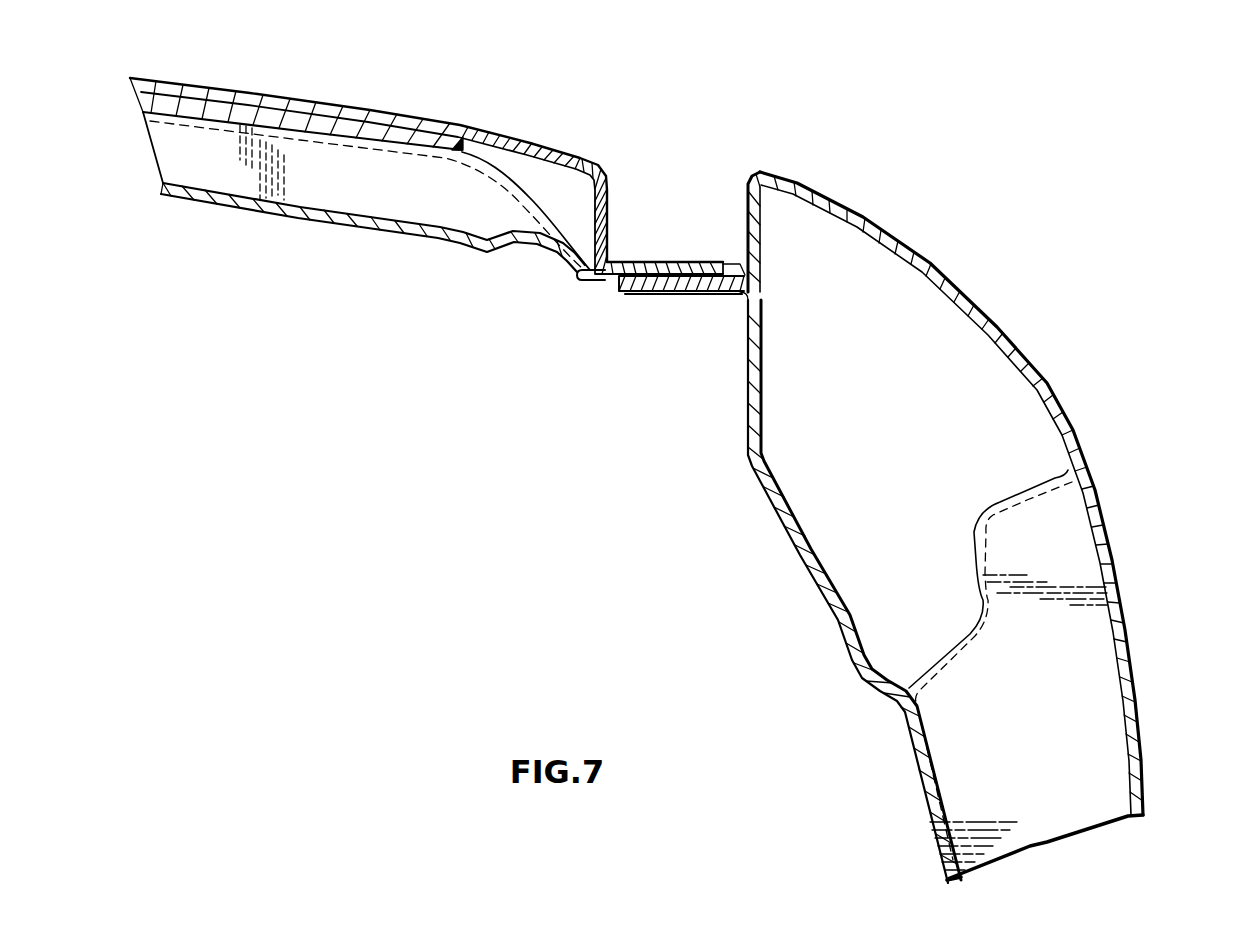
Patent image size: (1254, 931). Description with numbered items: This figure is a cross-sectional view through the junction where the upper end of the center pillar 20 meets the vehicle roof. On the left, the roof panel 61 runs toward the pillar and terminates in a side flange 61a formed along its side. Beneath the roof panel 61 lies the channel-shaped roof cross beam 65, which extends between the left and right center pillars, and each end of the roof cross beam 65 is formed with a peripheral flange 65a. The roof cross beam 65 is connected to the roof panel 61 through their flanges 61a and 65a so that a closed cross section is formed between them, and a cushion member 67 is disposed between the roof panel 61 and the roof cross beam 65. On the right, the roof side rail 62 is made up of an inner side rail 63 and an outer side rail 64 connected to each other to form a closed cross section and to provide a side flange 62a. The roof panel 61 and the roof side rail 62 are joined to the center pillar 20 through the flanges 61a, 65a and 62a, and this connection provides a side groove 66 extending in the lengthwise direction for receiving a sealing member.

The center pillar 20 is at (1150, 650).
The roof panel 61 is at (418, 115).
The side flange 61a is at (679, 260).
The roof side rail 62 is at (925, 501).
The side flange 62a is at (692, 296).
The inner side rail 63 is at (878, 341).
The outer side rail 64 is at (987, 325).
The roof cross beam 65 is at (360, 240).
The peripheral flange 65a is at (578, 274).
The side groove 66 is at (748, 222).
The cushion member 67 is at (258, 108).